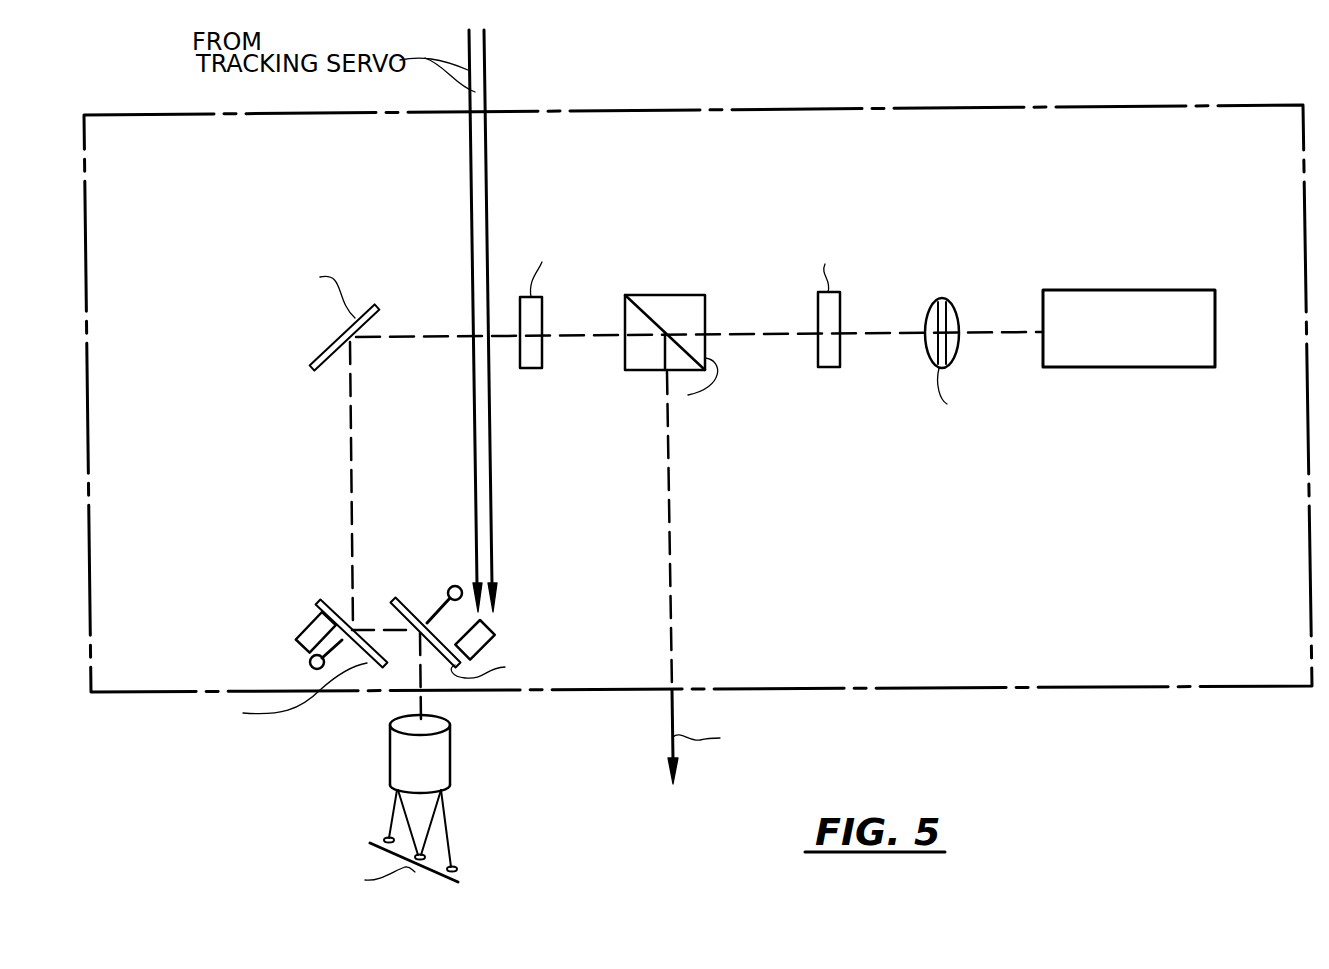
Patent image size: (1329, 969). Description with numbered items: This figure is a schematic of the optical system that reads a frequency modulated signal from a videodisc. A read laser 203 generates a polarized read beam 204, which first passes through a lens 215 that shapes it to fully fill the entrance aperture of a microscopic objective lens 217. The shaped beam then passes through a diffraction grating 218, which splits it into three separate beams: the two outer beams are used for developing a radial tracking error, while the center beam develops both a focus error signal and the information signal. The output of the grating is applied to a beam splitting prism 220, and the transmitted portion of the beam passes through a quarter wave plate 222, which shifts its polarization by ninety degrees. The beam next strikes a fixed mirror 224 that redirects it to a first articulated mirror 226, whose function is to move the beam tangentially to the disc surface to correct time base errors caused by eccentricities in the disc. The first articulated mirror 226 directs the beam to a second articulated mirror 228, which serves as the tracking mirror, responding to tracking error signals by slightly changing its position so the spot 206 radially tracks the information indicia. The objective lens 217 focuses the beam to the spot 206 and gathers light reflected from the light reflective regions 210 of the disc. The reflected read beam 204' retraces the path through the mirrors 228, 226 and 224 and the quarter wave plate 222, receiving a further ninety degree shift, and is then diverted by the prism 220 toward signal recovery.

The read laser 203 is at (1120, 290).
The read beam 204 is at (699, 357).
The reflected read beam 204' is at (827, 578).
The spot 206 is at (430, 857).
The light reflective regions 210 is at (470, 148).
The lens 215 is at (951, 306).
The microscopic objective lens 217 is at (450, 760).
The diffraction grating 218 is at (829, 367).
The beam splitting prism 220 is at (688, 295).
The quarter wave plate 222 is at (531, 368).
The fixed mirror 224 is at (320, 355).
The first articulated mirror 226 is at (322, 602).
The second articulated mirror 228 is at (420, 565).